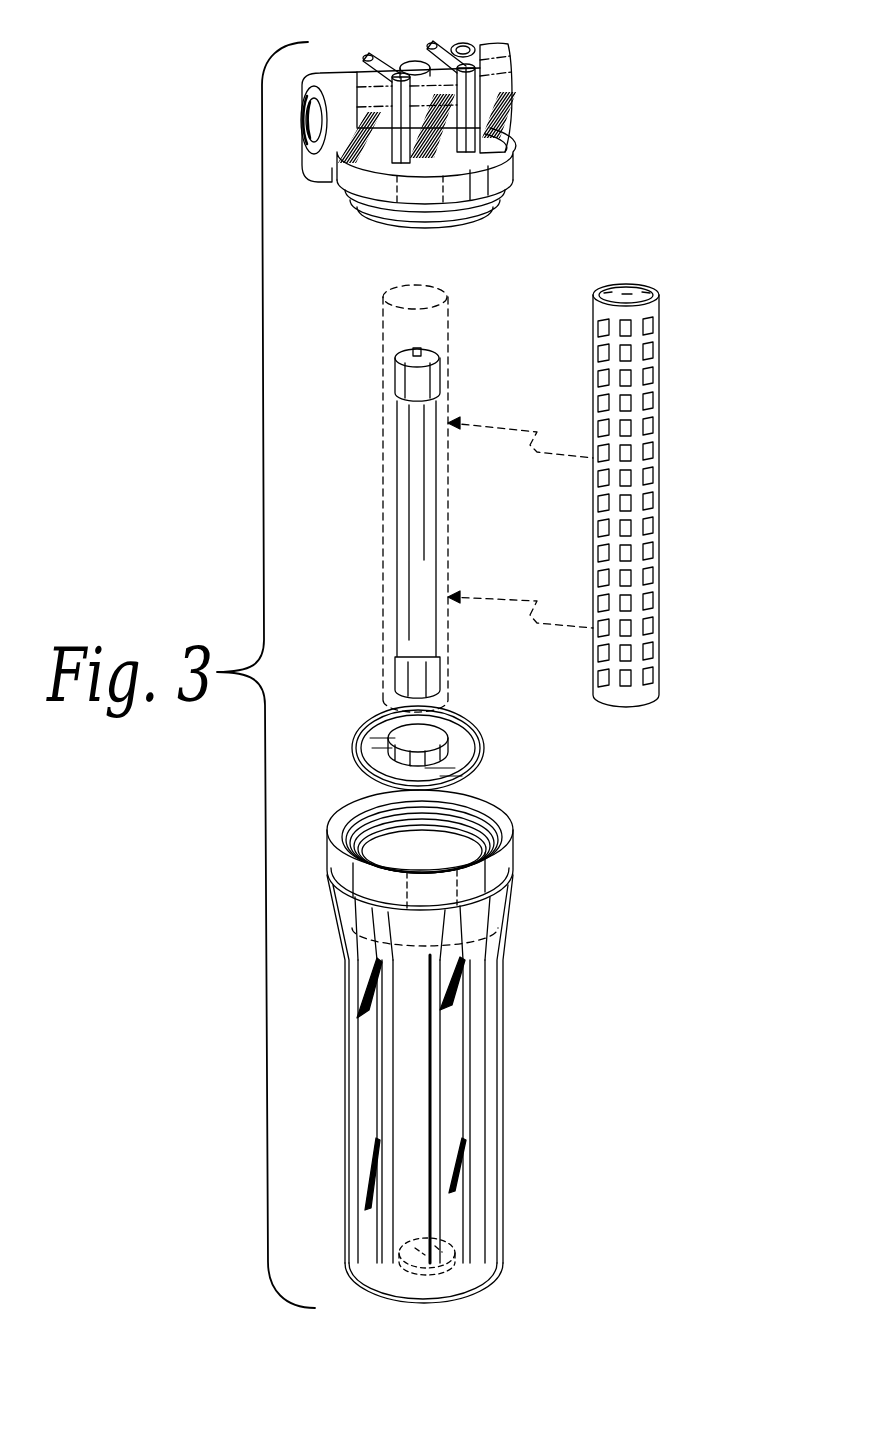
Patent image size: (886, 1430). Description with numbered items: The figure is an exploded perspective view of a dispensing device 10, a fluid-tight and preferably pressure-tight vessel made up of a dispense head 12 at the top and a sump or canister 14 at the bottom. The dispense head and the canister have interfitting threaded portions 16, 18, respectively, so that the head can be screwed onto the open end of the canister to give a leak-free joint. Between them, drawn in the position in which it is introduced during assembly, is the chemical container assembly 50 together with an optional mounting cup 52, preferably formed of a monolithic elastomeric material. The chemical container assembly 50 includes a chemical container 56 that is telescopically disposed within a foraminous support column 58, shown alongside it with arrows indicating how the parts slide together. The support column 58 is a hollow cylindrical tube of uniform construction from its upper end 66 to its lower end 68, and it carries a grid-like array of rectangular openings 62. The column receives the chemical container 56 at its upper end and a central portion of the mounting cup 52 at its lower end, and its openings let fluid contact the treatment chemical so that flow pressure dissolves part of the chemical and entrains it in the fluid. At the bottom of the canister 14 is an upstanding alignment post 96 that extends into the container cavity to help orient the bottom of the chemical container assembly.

The dispensing device 10 is at (703, 57).
The dispense head 12 is at (513, 73).
The canister 14 is at (504, 1090).
The threaded portion 16 is at (519, 182).
The threaded portion 18 is at (477, 817).
The chemical container assembly 50 is at (518, 284).
The mounting cup 52 is at (483, 742).
The chemical container 56 is at (430, 522).
The foraminous support column 58 is at (634, 638).
The rectangular openings 62 is at (628, 505).
The upper end 66 is at (636, 341).
The lower end 68 is at (634, 678).
The alignment post 96 is at (432, 1243).